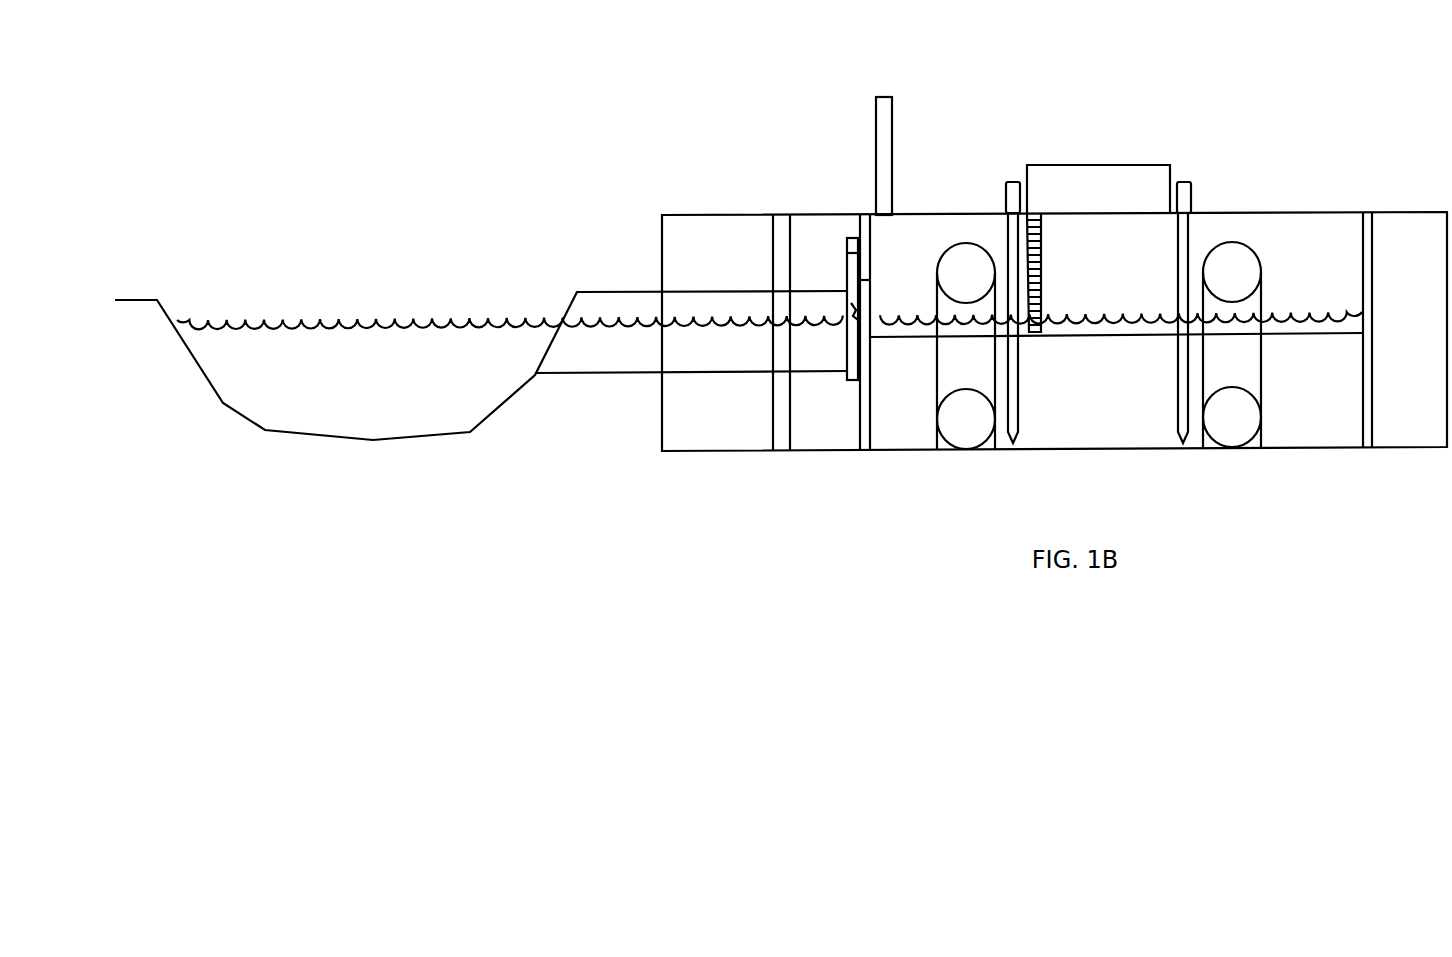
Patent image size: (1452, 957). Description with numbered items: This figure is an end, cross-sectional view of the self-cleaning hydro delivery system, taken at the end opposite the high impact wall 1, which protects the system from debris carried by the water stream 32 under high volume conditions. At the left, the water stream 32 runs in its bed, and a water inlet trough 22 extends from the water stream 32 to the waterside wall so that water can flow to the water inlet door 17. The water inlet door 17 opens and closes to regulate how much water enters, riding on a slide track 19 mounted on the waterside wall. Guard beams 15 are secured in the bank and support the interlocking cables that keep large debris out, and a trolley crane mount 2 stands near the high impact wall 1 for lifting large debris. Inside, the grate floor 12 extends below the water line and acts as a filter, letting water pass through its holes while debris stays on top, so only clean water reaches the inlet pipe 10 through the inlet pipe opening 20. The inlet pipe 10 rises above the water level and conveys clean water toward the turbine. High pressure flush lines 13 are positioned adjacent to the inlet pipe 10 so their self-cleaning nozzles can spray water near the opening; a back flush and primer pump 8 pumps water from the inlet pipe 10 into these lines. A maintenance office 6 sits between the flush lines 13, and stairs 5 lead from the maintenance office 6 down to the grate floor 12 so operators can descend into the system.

The high impact wall 1 is at (713, 215).
The guard beam 15 is at (772, 273).
The trolley crane mount 2 is at (876, 97).
The inlet pipe 10 is at (965, 243).
The back flush and primer pump 8 is at (1013, 180).
The stairs 5 is at (1037, 327).
The maintenance office 6 is at (1108, 165).
The high pressure flush line 13 is at (1013, 450).
The inlet pipe opening 20 is at (970, 420).
The grate floor 12 is at (1102, 337).
The water inlet door 17 is at (855, 315).
The slide track 19 is at (850, 380).
The water inlet trough 22 is at (689, 367).
The water stream 32 is at (398, 443).